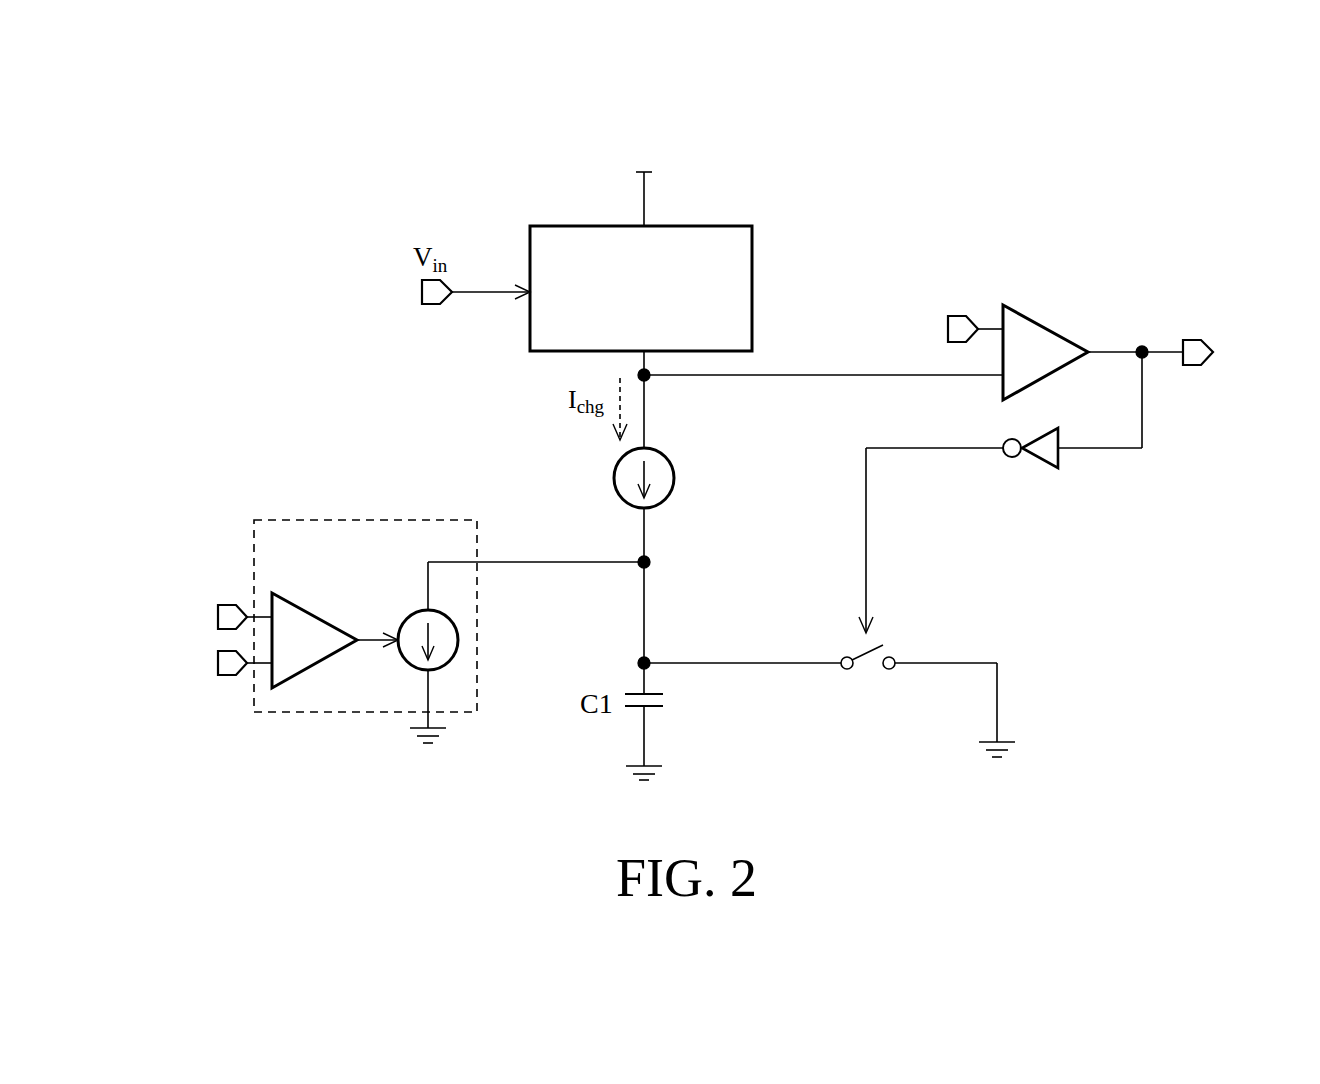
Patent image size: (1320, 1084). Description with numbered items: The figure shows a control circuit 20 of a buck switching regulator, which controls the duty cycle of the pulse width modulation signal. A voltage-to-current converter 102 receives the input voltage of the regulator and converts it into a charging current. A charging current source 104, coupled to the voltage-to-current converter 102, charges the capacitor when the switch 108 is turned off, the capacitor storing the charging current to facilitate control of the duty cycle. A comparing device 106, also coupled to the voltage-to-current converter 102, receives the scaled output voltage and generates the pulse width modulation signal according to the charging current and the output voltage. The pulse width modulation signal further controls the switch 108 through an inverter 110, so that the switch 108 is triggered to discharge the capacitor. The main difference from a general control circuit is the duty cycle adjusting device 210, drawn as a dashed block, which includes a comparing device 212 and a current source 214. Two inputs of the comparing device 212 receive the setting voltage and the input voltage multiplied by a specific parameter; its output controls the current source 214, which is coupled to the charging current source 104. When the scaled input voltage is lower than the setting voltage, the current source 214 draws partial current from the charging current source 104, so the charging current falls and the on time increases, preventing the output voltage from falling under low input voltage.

The control circuit 20 is at (1195, 162).
The voltage-to-current converter 102 is at (721, 226).
The charging current source 104 is at (613, 478).
The comparing device 106 is at (1045, 318).
The switch 108 is at (865, 672).
The inverter 110 is at (1045, 468).
The duty cycle adjusting device 210 is at (381, 518).
The comparing device 212 is at (311, 612).
The current source 214 is at (460, 640).